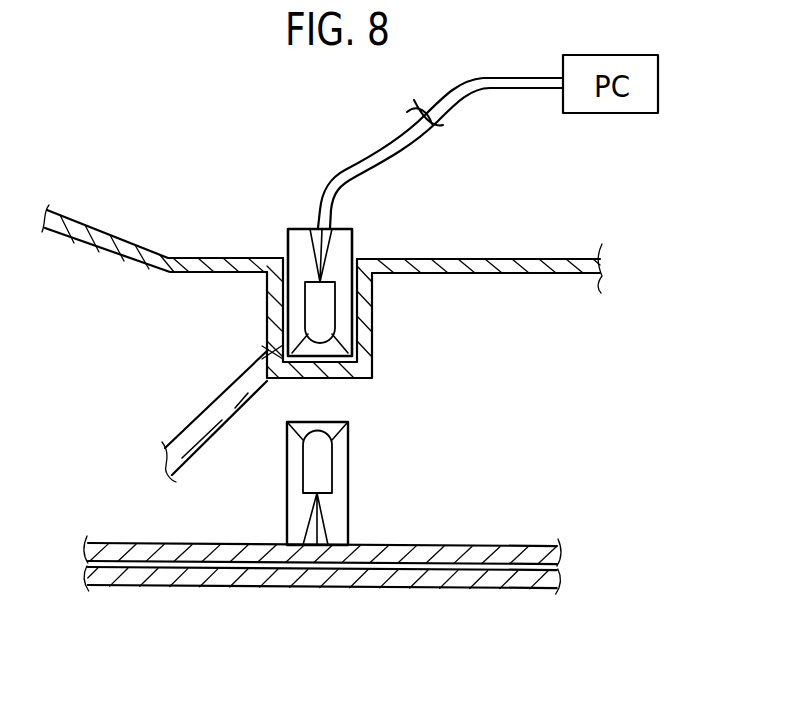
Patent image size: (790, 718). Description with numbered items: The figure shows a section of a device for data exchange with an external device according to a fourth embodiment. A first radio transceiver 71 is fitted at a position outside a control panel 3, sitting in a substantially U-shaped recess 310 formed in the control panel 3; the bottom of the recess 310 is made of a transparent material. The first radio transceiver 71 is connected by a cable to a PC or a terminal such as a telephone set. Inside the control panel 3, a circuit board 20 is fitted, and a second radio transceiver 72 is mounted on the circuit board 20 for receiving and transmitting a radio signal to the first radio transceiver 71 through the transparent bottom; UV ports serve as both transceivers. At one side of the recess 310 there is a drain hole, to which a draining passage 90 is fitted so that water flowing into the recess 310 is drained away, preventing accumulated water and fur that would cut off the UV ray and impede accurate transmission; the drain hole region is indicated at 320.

The control panel 3 is at (489, 260).
The circuit board 20 is at (463, 548).
The first radio transceiver 71 is at (302, 245).
The second radio transceiver 72 is at (300, 503).
The draining passage 90 is at (202, 418).
The recess 310 is at (365, 341).
The window opening 320 is at (268, 338).